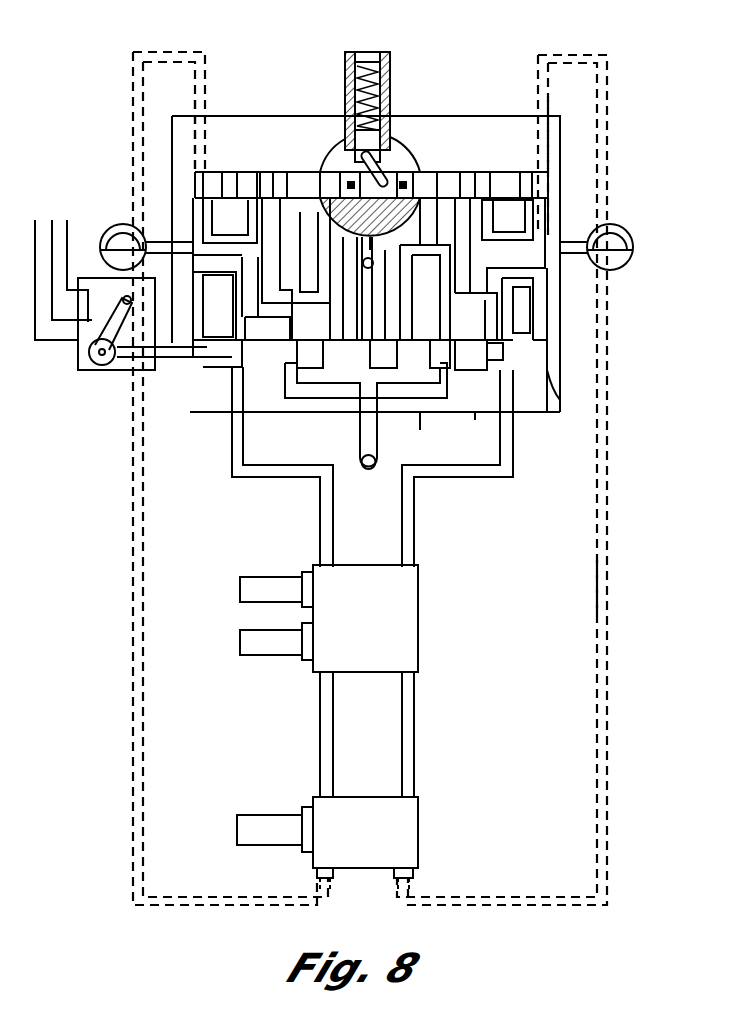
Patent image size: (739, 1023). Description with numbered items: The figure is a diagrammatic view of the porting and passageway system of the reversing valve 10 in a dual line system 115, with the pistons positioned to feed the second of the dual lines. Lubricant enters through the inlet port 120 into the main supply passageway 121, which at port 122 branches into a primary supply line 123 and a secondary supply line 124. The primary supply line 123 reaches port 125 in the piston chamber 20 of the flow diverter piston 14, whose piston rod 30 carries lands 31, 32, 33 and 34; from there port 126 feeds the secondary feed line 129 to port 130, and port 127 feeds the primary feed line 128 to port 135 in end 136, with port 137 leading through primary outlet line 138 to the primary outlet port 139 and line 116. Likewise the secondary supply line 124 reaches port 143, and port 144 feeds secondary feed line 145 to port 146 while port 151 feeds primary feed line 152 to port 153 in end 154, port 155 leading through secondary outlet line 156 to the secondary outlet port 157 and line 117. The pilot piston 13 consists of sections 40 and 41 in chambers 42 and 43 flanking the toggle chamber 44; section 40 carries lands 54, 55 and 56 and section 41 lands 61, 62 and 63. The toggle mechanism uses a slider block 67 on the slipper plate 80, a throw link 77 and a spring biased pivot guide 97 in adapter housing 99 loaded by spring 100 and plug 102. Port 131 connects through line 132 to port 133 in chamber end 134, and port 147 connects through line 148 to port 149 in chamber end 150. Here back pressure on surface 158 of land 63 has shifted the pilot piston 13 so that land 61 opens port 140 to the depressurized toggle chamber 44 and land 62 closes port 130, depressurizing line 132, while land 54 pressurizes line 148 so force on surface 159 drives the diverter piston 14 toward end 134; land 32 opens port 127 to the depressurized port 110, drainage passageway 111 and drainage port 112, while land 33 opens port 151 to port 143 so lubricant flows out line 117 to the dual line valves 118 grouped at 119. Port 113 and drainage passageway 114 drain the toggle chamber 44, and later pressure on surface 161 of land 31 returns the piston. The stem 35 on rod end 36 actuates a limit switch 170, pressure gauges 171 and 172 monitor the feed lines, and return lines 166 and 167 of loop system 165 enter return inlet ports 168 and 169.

The reversing valve 10 is at (480, 116).
The pilot piston 13 is at (430, 168).
The flow diverter piston 14 is at (468, 315).
The piston chamber 20 is at (548, 397).
The piston rod 30 is at (362, 368).
The piston land 31 is at (236, 378).
The piston land 32 is at (312, 368).
The piston land 33 is at (430, 368).
The piston land 34 is at (473, 370).
The stem 35 is at (116, 358).
The piston rod end 36 is at (182, 378).
The pilot piston section 40 is at (462, 170).
The pilot piston section 41 is at (292, 172).
The piston chamber 42 is at (496, 172).
The piston chamber 43 is at (262, 172).
The toggle chamber 44 is at (340, 172).
The piston land 54 is at (462, 172).
The piston land 55 is at (490, 172).
The piston land 56 is at (518, 172).
The piston land 61 is at (370, 186).
The piston land 62 is at (268, 172).
The piston land 63 is at (232, 172).
The slider block 67 is at (382, 226).
The throw link 77 is at (384, 170).
The slipper plate 80 is at (379, 288).
The pivot guide 97 is at (380, 150).
The adapter housing 99 is at (386, 55).
The spring 100 is at (391, 82).
The plug 102 is at (357, 54).
The port 110 is at (368, 330).
The drainage passageway 111 is at (368, 308).
The drainage port 112 is at (373, 288).
The port 113 is at (404, 236).
The drainage passageway 114 is at (345, 288).
The dual line system 115 is at (420, 705).
The line 116 is at (320, 518).
The line 117 is at (414, 518).
The dual line valve 118 is at (308, 572).
The group of dual line valves 119 is at (418, 613).
The inlet port 120 is at (380, 442).
The main supply passageway 121 is at (355, 415).
The port 122 is at (378, 414).
The primary supply line 123 is at (300, 414).
The secondary supply line 124 is at (436, 432).
The port 125 is at (290, 373).
The port 126 is at (300, 340).
The port 127 is at (343, 340).
The primary feed line 128 is at (350, 288).
The secondary feed line 129 is at (278, 290).
The port 130 is at (256, 205).
The port 131 is at (315, 269).
The line 132 is at (218, 306).
The port 133 is at (222, 336).
The chamber end 134 is at (200, 337).
The port 135 is at (230, 218).
The chamber end 136 is at (194, 186).
The port 137 is at (205, 257).
The primary outlet line 138 is at (266, 300).
The primary outlet port 139 is at (247, 414).
The port 140 is at (302, 172).
The port 143 is at (426, 413).
The port 144 is at (466, 340).
The secondary feed line 145 is at (480, 230).
The port 146 is at (480, 209).
The port 147 is at (440, 221).
The line 148 is at (533, 308).
The port 149 is at (533, 323).
The chamber end 150 is at (547, 350).
The port 151 is at (420, 340).
The primary feed line 152 is at (425, 292).
The port 153 is at (548, 212).
The chamber end 154 is at (548, 192).
The port 155 is at (546, 262).
The secondary outlet line 156 is at (533, 287).
The secondary outlet port 157 is at (520, 418).
The surface 158 is at (222, 172).
The surface 159 is at (475, 413).
The surface 161 is at (202, 362).
The loop system 165 is at (612, 592).
The return line 166 is at (133, 500).
The return line 167 is at (607, 512).
The return inlet port 168 is at (235, 167).
The return inlet port 169 is at (546, 176).
The limit switch 170 is at (78, 368).
The pressure gauge 171 is at (121, 224).
The pressure gauge 172 is at (633, 247).